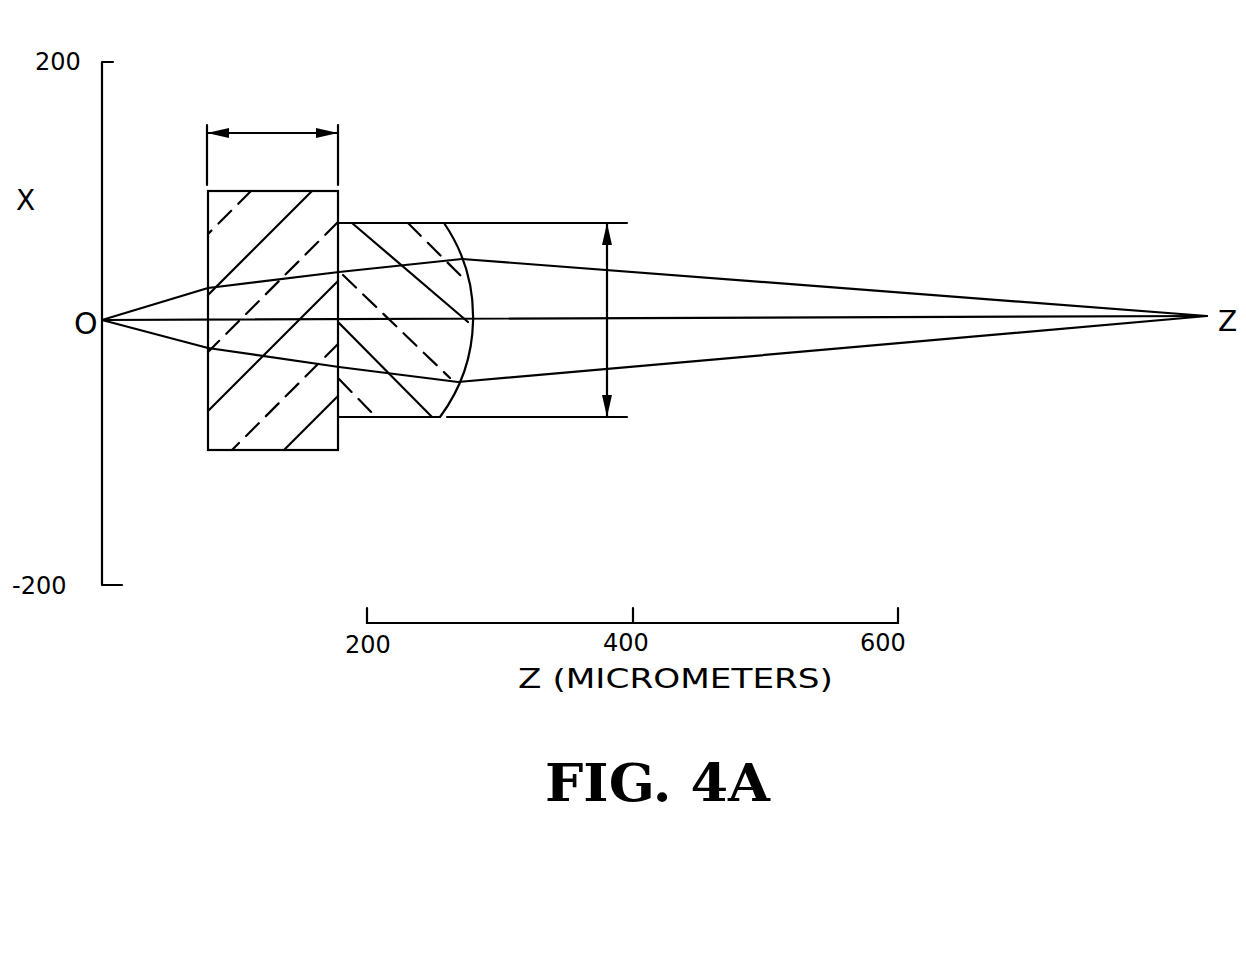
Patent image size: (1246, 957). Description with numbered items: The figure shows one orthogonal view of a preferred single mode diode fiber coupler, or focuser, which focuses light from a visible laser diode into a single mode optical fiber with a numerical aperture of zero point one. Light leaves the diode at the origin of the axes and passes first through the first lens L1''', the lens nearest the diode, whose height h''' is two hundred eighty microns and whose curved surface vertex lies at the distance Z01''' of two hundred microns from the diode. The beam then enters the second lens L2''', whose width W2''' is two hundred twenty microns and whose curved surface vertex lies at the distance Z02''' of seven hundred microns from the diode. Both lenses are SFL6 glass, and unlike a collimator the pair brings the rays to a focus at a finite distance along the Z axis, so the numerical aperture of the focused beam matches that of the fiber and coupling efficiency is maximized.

The lens height h''' is at (272, 131).
The first lens L1''' is at (273, 358).
The second lens L2''' is at (406, 355).
The width of second lens W2''' is at (525, 320).
The distance from diode to vertex of first lens Z01''' is at (155, 352).
The distance from diode to vertex of second lens Z02''' is at (832, 320).